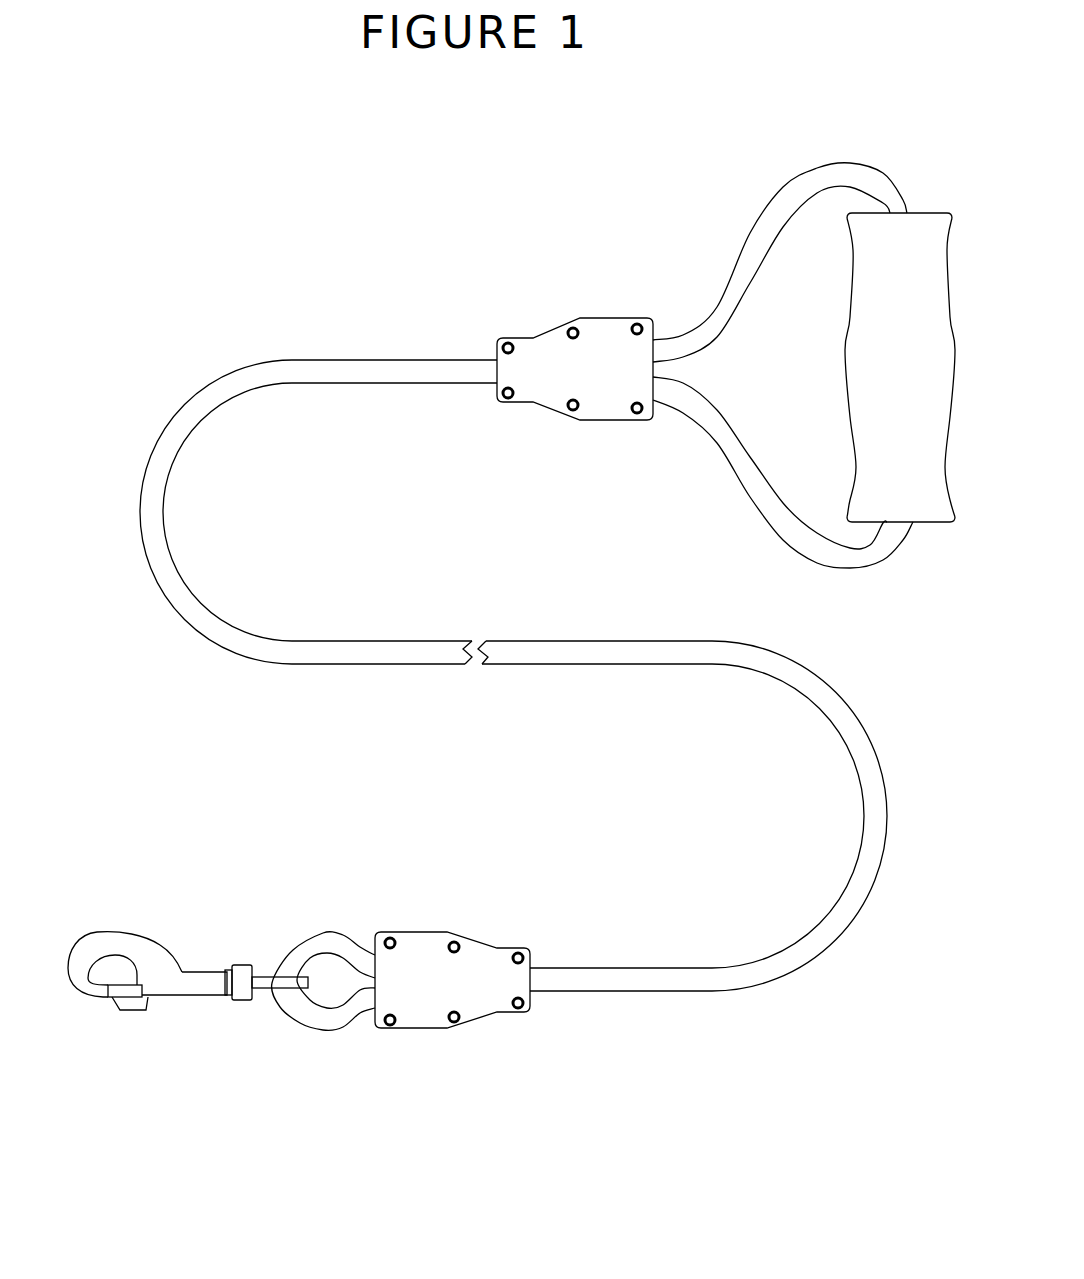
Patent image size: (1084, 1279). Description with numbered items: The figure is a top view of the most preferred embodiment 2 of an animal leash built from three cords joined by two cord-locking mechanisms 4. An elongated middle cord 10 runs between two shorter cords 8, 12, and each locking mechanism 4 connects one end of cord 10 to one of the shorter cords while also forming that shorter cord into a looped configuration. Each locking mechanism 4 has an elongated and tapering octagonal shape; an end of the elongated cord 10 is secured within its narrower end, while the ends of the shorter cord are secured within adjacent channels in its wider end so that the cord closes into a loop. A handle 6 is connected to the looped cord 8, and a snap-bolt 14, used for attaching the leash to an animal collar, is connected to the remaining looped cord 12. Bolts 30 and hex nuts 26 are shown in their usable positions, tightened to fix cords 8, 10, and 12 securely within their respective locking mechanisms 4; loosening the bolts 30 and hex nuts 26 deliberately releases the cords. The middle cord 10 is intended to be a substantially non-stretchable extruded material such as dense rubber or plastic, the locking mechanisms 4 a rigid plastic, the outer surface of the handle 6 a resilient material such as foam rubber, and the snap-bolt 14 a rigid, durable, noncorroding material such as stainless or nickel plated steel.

The most preferred embodiment 2 is at (203, 197).
The cord-locking mechanism 4 is at (582, 318).
The handle 6 is at (932, 212).
The cord 8 is at (712, 433).
The elongated cord 10 is at (310, 640).
The cord 12 is at (320, 933).
The snap-bolt 14 is at (158, 997).
The hex nut 26 is at (503, 402).
The bolt 30 is at (506, 345).